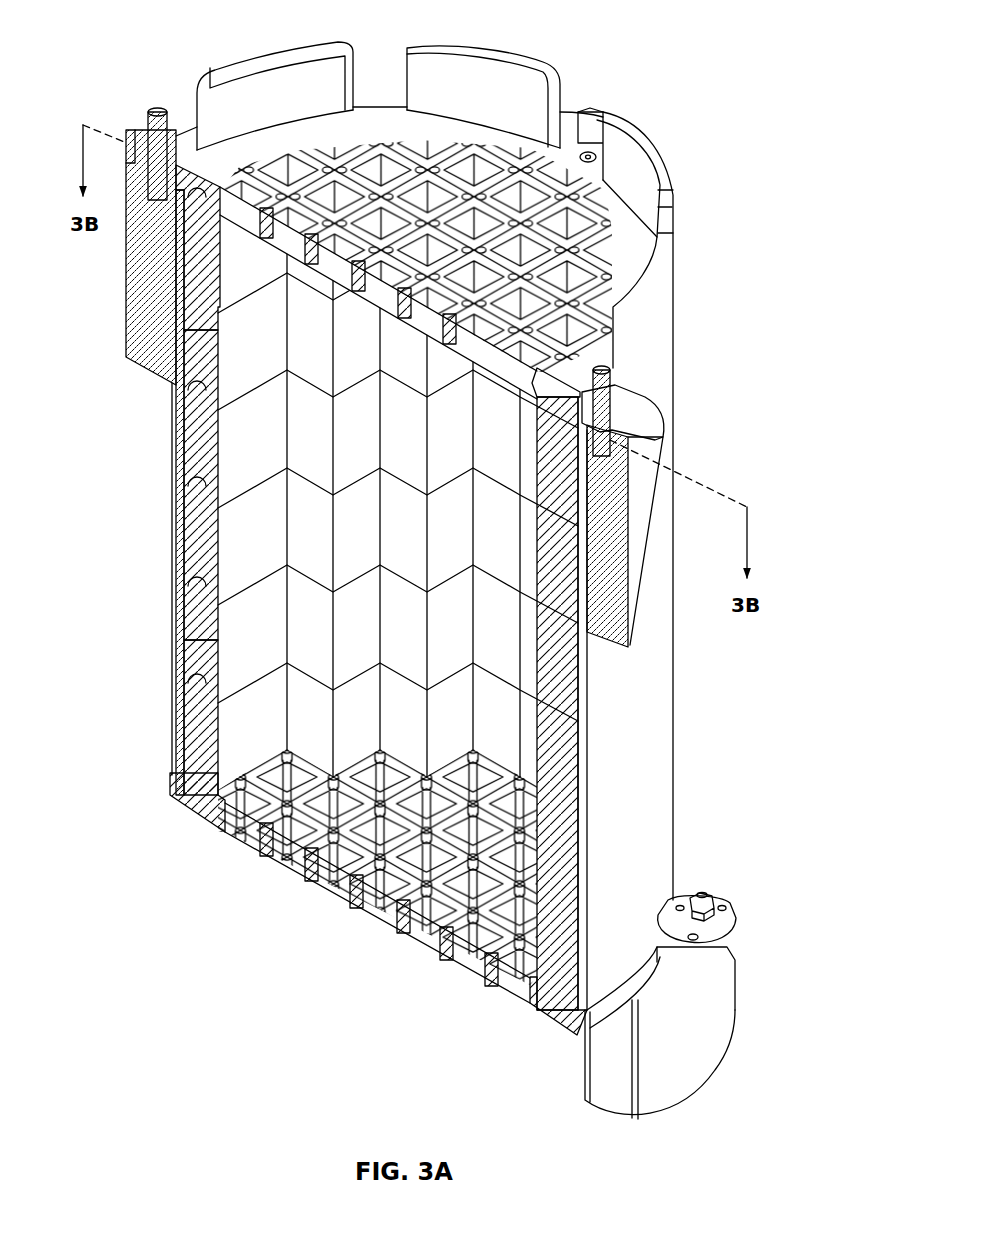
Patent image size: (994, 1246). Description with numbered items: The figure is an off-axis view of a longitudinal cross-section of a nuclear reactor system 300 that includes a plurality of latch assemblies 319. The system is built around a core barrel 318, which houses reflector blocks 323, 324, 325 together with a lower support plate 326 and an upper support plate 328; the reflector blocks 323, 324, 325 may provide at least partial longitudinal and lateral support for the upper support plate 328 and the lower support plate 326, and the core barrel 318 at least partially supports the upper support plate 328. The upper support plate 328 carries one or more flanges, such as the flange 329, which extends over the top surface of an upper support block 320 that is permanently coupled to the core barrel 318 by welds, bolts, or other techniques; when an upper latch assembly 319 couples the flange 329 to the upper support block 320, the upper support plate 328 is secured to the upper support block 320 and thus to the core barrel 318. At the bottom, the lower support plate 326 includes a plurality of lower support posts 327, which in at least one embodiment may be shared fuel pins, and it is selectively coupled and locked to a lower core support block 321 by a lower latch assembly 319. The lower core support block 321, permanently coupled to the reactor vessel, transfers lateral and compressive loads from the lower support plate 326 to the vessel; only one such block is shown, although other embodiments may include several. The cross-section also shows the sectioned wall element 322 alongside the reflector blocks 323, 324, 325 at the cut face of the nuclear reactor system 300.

The nuclear reactor system 300 is at (738, 55).
The core barrel 318 is at (666, 301).
The latch assemblies 319 is at (634, 388).
The upper support block 320 is at (646, 469).
The lower core support block 321 is at (688, 1047).
The outer wall block 322 is at (122, 240).
The reflector block 323 is at (191, 244).
The reflector block 324 is at (183, 547).
The reflector block 325 is at (192, 727).
The lower support plate 326 is at (192, 799).
The lower support posts 327 is at (271, 807).
The upper support plate 328 is at (365, 123).
The flange 329 is at (655, 407).